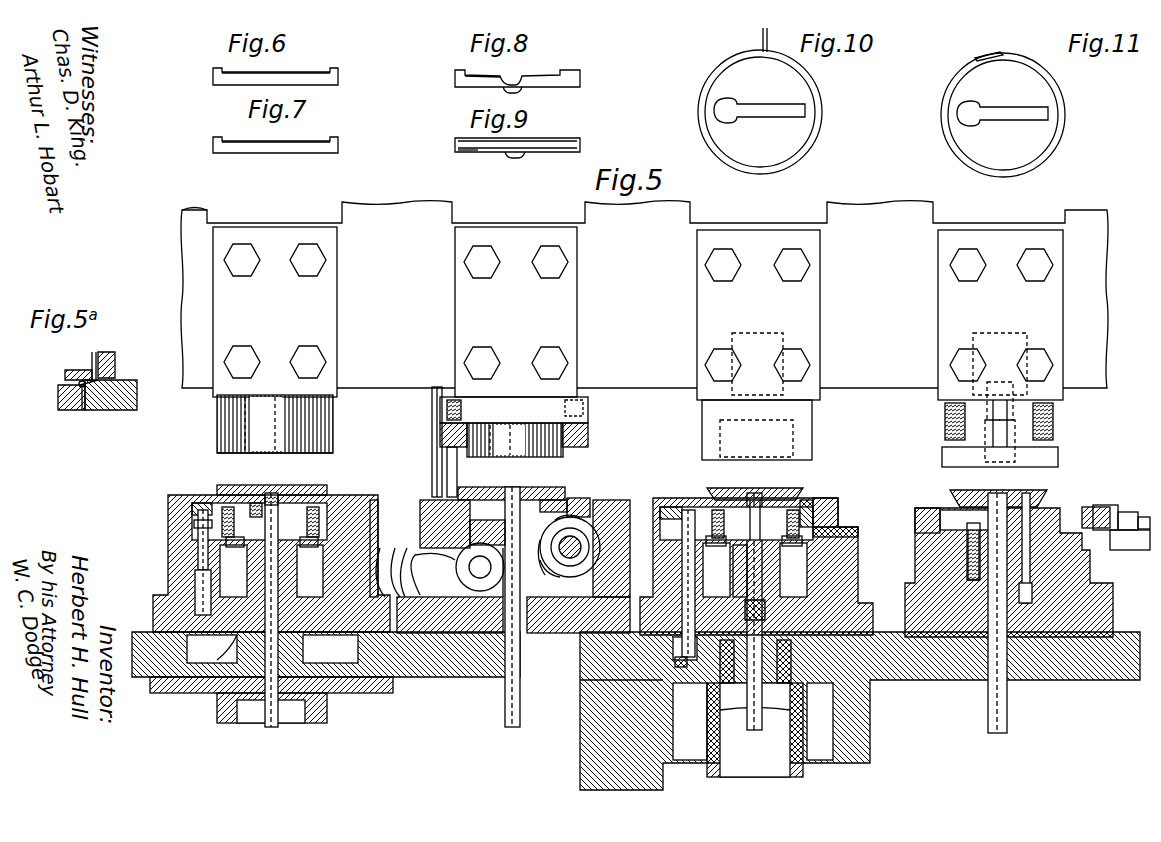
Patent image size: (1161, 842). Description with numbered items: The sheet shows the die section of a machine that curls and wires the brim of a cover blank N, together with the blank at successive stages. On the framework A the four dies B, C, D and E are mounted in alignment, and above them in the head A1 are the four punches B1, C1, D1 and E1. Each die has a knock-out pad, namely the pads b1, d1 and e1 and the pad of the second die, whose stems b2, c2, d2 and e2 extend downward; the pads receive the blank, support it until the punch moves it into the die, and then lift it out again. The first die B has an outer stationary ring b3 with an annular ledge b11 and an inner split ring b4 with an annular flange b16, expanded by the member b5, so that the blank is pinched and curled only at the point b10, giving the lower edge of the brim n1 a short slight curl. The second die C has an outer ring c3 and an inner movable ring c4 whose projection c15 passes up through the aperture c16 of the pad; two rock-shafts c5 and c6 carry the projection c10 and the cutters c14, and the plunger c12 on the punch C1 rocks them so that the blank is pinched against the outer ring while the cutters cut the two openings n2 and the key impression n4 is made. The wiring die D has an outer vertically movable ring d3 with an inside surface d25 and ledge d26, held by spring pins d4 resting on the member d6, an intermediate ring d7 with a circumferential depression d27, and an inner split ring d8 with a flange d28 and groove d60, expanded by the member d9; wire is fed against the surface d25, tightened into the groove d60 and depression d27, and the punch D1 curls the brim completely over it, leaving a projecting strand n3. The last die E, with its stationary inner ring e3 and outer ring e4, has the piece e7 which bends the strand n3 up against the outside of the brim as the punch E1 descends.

In FIG. 6, the blank N is at (213, 72).
In FIG. 7, the blank N is at (213, 141).
In FIG. 8, the blank N is at (455, 80).
In FIG. 9, the blank N is at (455, 140).
In FIG. 10, the blank N is at (698, 110).
In FIG. 11, the blank N is at (941, 121).
In FIG. 6, the brim n1 is at (240, 85).
In FIG. 7, the brim n1 is at (215, 153).
In FIG. 8, the brim n1 is at (470, 87).
In FIG. 9, the brim n1 is at (465, 152).
In FIG. 8, the openings n2 is at (515, 91).
In FIG. 9, the openings n2 is at (522, 153).
In FIG. 10, the projecting strand of wire n3 is at (762, 38).
In FIG. 11, the projecting strand of wire n3 is at (978, 57).
In FIG. 10, the key impression n4 is at (772, 117).
In FIG. 11, the key impression n4 is at (1010, 120).
In FIG. 5, the framework A is at (462, 677).
In FIG. 5, the head A1 is at (644, 294).
In FIG. 5, the first die B is at (255, 563).
In FIG. 5, the first punch B1 is at (217, 432).
In FIG. 5, the knock-out pad of die B b1 is at (298, 485).
In FIG. 5, the stem of knock-out pad b2 is at (270, 728).
In FIG. 5, the outer stationary ring b3 is at (250, 505).
In FIG. 5, the inner split ring b4 is at (262, 492).
In FIG. 5, the expanding member b5 is at (218, 660).
In FIG. 5, the curling point b10 is at (195, 530).
In FIG. 5, the annular ledge b11 is at (192, 506).
In FIG. 5, the annular flange b16 is at (203, 505).
In FIG. 5, the second die C is at (500, 557).
In FIG. 5, the second punch C1 is at (440, 435).
In FIG. 5, the stem of knock-out pad c2 is at (510, 728).
In FIG. 5, the outer ring c3 is at (562, 520).
In FIG. 5, the inner movable ring c4 is at (549, 568).
In FIG. 5, the rock-shaft c5 is at (475, 567).
In FIG. 5, the rock-shaft c6 is at (583, 547).
In FIG. 5, the projection c10 is at (475, 540).
In FIG. 5, the plunger c12 is at (432, 455).
In FIG. 5, the cutters c14 is at (590, 565).
In FIG. 5, the projection c15 is at (578, 520).
In FIG. 5, the aperture c16 is at (572, 497).
In FIG. 5, the third die D is at (754, 558).
In FIG. 5, the third punch D1 is at (702, 440).
In FIG. 5, the knock-out pad of die D d1 is at (742, 488).
In FIG. 5, the stem of knock-out pad d2 is at (752, 735).
In FIG. 5A, the outer vertically-movable ring d3 is at (115, 360).
In FIG. 5, the outer vertically-movable ring d3 is at (822, 502).
In FIG. 5, the pins d4 is at (807, 650).
In FIG. 5, the member d6 is at (612, 760).
In FIG. 5A, the intermediate stationary ring d7 is at (60, 398).
In FIG. 5, the intermediate stationary ring d7 is at (837, 537).
In FIG. 5, the inner expansible split ring d8 is at (750, 572).
In FIG. 5, the expanding member d9 is at (803, 607).
In FIG. 5A, the inside peripheral surface d25 is at (90, 408).
In FIG. 5, the inside peripheral surface d25 is at (835, 520).
In FIG. 5A, the circumferential ledge d26 is at (94, 355).
In FIG. 5, the circumferential ledge d26 is at (800, 490).
In FIG. 5A, the circumferential depression d27 is at (85, 402).
In FIG. 5, the circumferential depression d27 is at (690, 505).
In FIG. 5A, the annular flange d28 is at (68, 372).
In FIG. 5, the annular flange d28 is at (818, 470).
In FIG. 5A, the circumferential groove d60 is at (130, 385).
In FIG. 5, the fourth die E is at (995, 561).
In FIG. 5, the fourth punch E1 is at (945, 428).
In FIG. 5, the knock-out pad of die E e1 is at (1003, 492).
In FIG. 5, the stem of knock-out pad e2 is at (990, 730).
In FIG. 5, the stationary inner ring e3 is at (1032, 505).
In FIG. 5, the stationary outer ring e4 is at (930, 508).
In FIG. 5, the bending piece e7 is at (1110, 495).